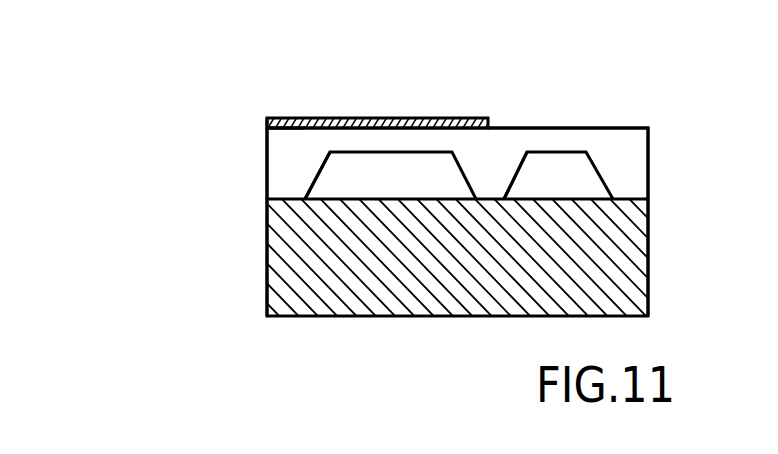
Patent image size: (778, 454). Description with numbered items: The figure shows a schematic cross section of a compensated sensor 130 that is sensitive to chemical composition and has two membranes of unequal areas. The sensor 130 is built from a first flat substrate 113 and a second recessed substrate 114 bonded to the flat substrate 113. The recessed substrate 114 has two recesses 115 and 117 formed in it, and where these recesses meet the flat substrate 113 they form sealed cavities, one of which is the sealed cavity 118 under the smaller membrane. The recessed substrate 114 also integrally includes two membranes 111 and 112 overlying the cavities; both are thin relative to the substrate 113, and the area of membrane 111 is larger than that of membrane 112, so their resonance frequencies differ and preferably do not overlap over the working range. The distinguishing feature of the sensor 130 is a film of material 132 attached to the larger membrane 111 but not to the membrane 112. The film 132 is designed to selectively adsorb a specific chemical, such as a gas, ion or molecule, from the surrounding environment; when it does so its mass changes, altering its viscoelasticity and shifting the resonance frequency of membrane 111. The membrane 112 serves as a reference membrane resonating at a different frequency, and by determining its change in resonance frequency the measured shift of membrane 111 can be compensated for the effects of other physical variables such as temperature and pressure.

The sensor 130 is at (158, 142).
The membrane 111 is at (380, 140).
The membrane 112 is at (553, 142).
The first flat substrate 113 is at (292, 246).
The second recessed substrate 114 is at (282, 163).
The recess 115 is at (319, 179).
The recess 117 is at (515, 182).
The sealed cavity 118 is at (577, 180).
The film 132 is at (458, 118).